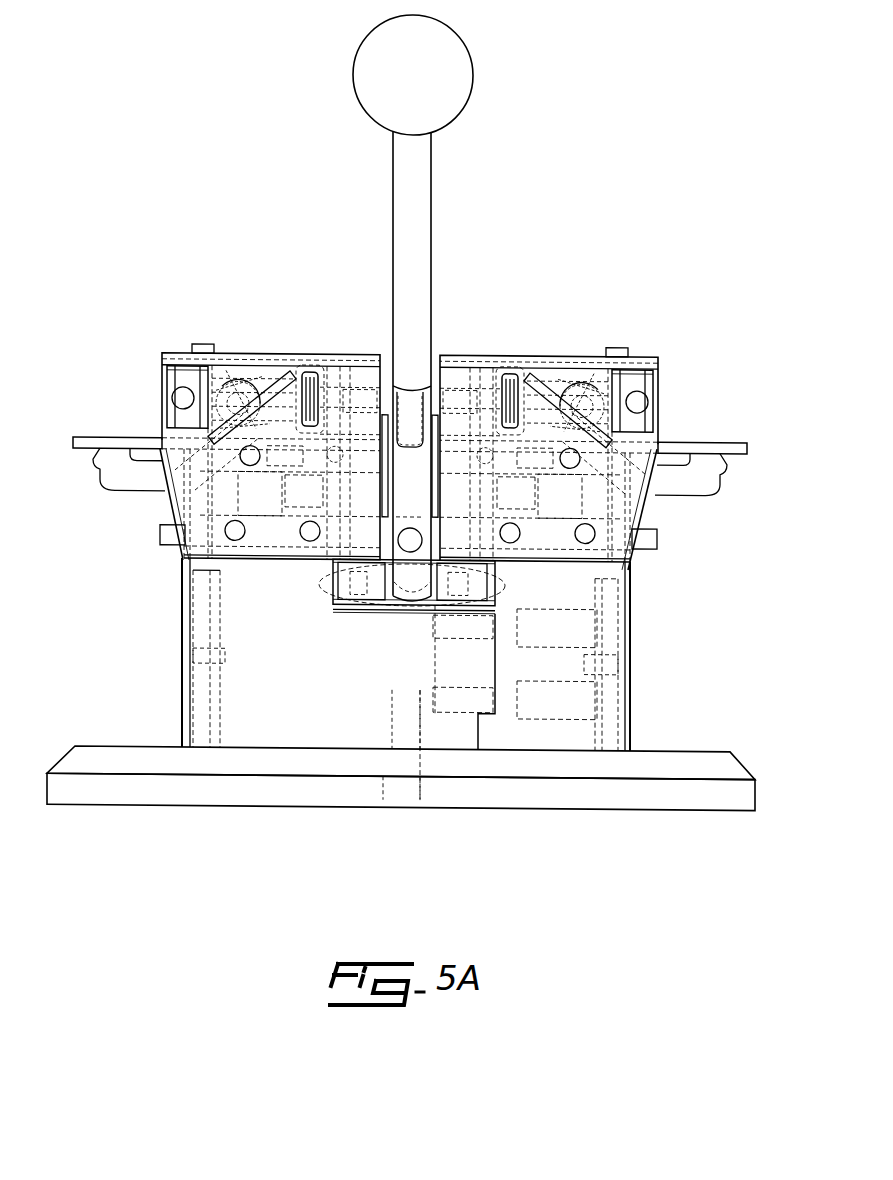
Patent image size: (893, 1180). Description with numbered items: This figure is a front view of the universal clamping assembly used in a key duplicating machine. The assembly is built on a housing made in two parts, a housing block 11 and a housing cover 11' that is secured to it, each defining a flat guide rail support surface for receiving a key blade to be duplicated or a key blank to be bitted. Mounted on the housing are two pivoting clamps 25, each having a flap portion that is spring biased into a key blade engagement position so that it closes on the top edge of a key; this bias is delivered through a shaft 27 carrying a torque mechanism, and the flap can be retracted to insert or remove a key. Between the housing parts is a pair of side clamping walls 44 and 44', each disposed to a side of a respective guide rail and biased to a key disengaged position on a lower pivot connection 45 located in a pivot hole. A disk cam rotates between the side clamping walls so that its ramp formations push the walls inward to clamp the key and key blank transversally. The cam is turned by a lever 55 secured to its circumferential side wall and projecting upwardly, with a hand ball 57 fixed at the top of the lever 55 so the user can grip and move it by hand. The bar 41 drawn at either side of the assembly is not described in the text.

The hand ball 57 is at (456, 63).
The lever 55 is at (421, 222).
The shaft 27 is at (232, 380).
The pivoting clamp 25 is at (274, 383).
The mounting bar 41 is at (117, 440).
The housing block 11 is at (401, 684).
The housing cover 11' is at (567, 704).
The lower pivot connection 45 is at (507, 572).
The side clamping wall 44 is at (349, 617).
The side clamping wall 44' is at (434, 618).